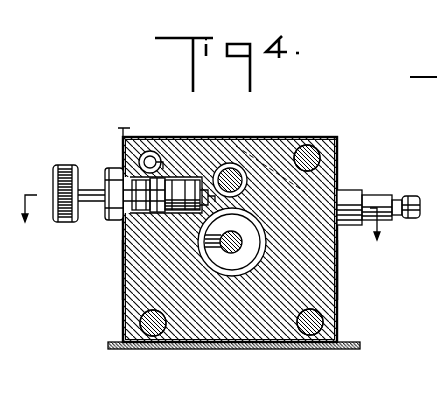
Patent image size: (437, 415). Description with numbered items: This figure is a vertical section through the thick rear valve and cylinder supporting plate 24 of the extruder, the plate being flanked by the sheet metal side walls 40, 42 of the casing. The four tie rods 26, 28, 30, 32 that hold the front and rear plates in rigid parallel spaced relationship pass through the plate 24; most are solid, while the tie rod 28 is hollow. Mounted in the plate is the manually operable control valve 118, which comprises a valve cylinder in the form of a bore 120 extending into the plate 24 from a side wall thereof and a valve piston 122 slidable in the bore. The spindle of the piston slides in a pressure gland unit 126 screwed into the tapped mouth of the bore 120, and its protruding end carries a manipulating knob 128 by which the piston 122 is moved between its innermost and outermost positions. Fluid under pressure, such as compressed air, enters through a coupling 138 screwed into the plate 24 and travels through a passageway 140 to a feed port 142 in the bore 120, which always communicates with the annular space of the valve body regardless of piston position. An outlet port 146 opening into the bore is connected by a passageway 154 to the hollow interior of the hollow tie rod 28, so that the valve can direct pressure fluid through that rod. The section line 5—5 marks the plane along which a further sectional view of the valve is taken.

The section line 5- 5 is at (202, 228).
The rear valve and cylinder supporting plate 24 is at (252, 139).
The tie rod 26 is at (308, 144).
The hollow tie rod 28 is at (135, 140).
The tie rod 30 is at (321, 322).
The tie rod 32 is at (140, 320).
The side wall 40 is at (122, 281).
The side wall 42 is at (338, 282).
The manually operable control valve 118 is at (88, 157).
The bore 120 is at (163, 214).
The valve piston 122 is at (183, 212).
The pressure gland unit 126 is at (118, 225).
The manipulating knob 128 is at (70, 226).
The coupling 138 is at (392, 193).
The passageway 140 is at (279, 150).
The feed port 142 is at (198, 179).
The outlet port 146 is at (170, 177).
The passageway 154 is at (160, 150).